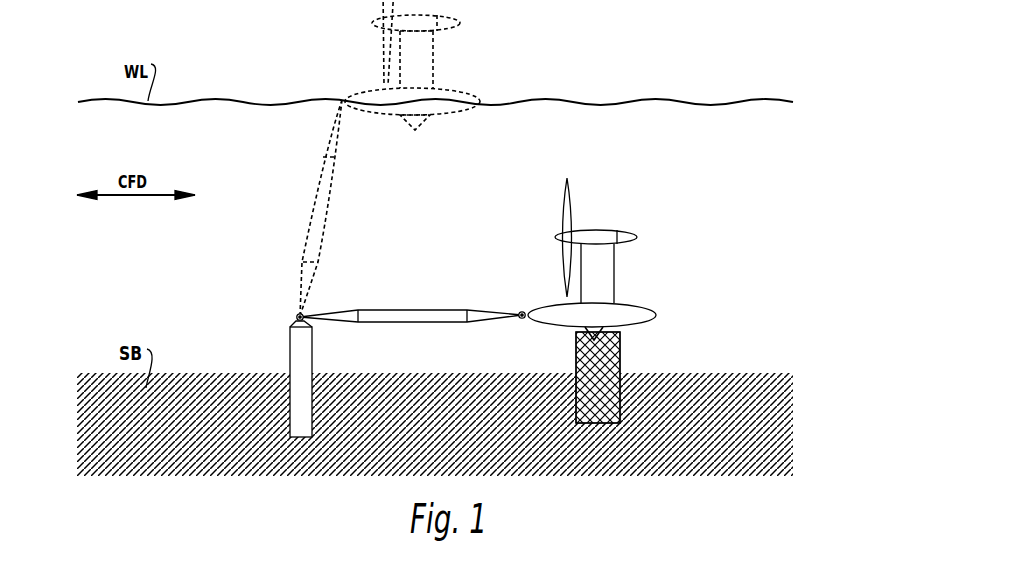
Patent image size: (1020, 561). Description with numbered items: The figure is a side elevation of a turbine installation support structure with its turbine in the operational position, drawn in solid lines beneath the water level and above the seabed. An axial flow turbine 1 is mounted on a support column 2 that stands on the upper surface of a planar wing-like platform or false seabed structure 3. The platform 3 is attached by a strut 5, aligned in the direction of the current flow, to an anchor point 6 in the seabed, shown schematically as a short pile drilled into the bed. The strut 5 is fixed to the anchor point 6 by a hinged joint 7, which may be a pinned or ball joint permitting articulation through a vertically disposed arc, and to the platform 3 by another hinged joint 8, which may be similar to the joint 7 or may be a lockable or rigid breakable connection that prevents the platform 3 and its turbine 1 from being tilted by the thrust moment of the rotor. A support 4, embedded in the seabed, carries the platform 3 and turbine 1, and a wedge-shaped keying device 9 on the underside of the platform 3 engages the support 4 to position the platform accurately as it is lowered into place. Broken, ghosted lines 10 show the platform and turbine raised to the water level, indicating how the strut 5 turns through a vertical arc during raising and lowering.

The turbine 1 is at (565, 215).
The support column 2 is at (614, 270).
The planar wing-like platform or false seabed structure 3 is at (650, 305).
The support 4 is at (622, 366).
The strut 5 is at (410, 310).
The anchor point 6 is at (290, 357).
The hinged joint 7 is at (297, 314).
The hinged joint 8 is at (522, 312).
The wedge-shaped keying device 9 is at (577, 341).
The broken lines 10 is at (353, 90).